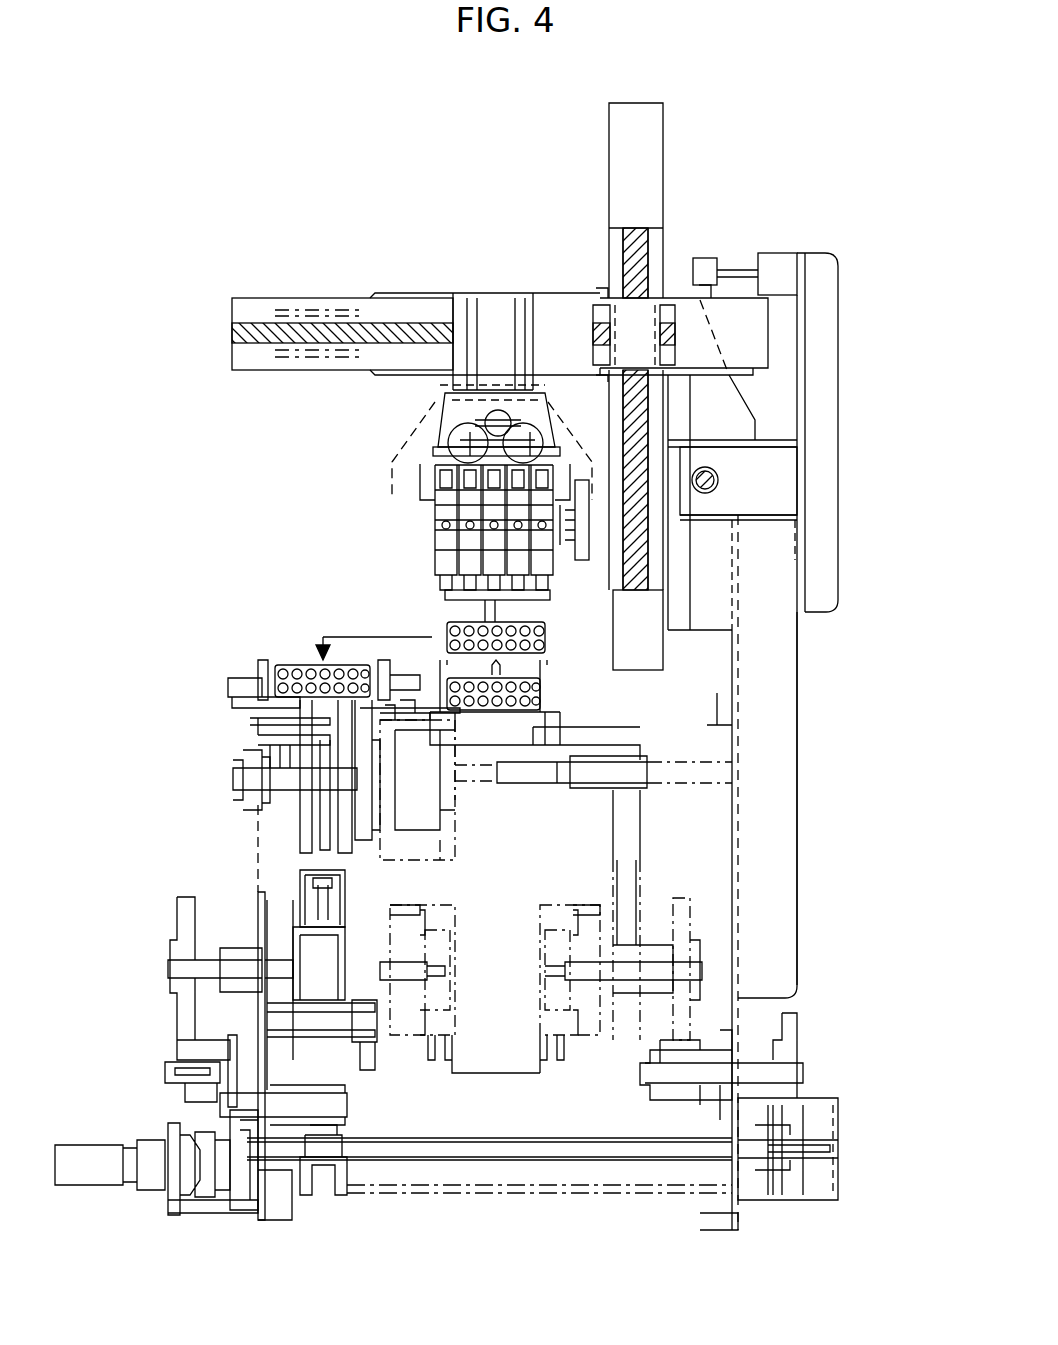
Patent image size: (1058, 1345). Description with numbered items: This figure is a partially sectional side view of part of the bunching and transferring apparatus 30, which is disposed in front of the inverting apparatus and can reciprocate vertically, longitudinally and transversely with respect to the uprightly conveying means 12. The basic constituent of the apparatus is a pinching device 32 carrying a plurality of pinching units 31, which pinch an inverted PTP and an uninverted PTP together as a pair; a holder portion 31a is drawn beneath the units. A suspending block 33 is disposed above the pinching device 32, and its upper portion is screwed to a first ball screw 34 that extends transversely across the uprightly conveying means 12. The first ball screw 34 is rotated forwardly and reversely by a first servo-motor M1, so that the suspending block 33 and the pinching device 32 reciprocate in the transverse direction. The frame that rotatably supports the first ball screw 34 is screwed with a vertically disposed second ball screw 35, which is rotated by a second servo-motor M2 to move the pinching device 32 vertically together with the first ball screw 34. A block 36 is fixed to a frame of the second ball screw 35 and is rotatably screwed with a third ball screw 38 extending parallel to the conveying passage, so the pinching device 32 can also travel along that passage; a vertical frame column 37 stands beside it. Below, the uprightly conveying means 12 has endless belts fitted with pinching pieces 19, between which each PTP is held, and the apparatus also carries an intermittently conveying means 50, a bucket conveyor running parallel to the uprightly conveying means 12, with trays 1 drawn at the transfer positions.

The bunching and transferring apparatus 30 is at (417, 379).
The first ball screw 34 is at (262, 330).
The suspending block 33 is at (487, 312).
The pinching device 32 is at (425, 511).
The pinching units 31 is at (430, 558).
The nozzle holder 31a is at (510, 606).
The second ball screw 35 is at (640, 243).
The second servo-motor M2 is at (645, 130).
The first servo-motor M1 is at (790, 284).
The block 36 is at (788, 544).
The third ball screw 38 is at (722, 472).
The vertical frame column 37 is at (775, 800).
The tray 1 is at (298, 660).
The uprightly conveying means 12 is at (447, 674).
The pinching pieces 19 is at (520, 672).
The intermittently conveying means 50 is at (252, 658).